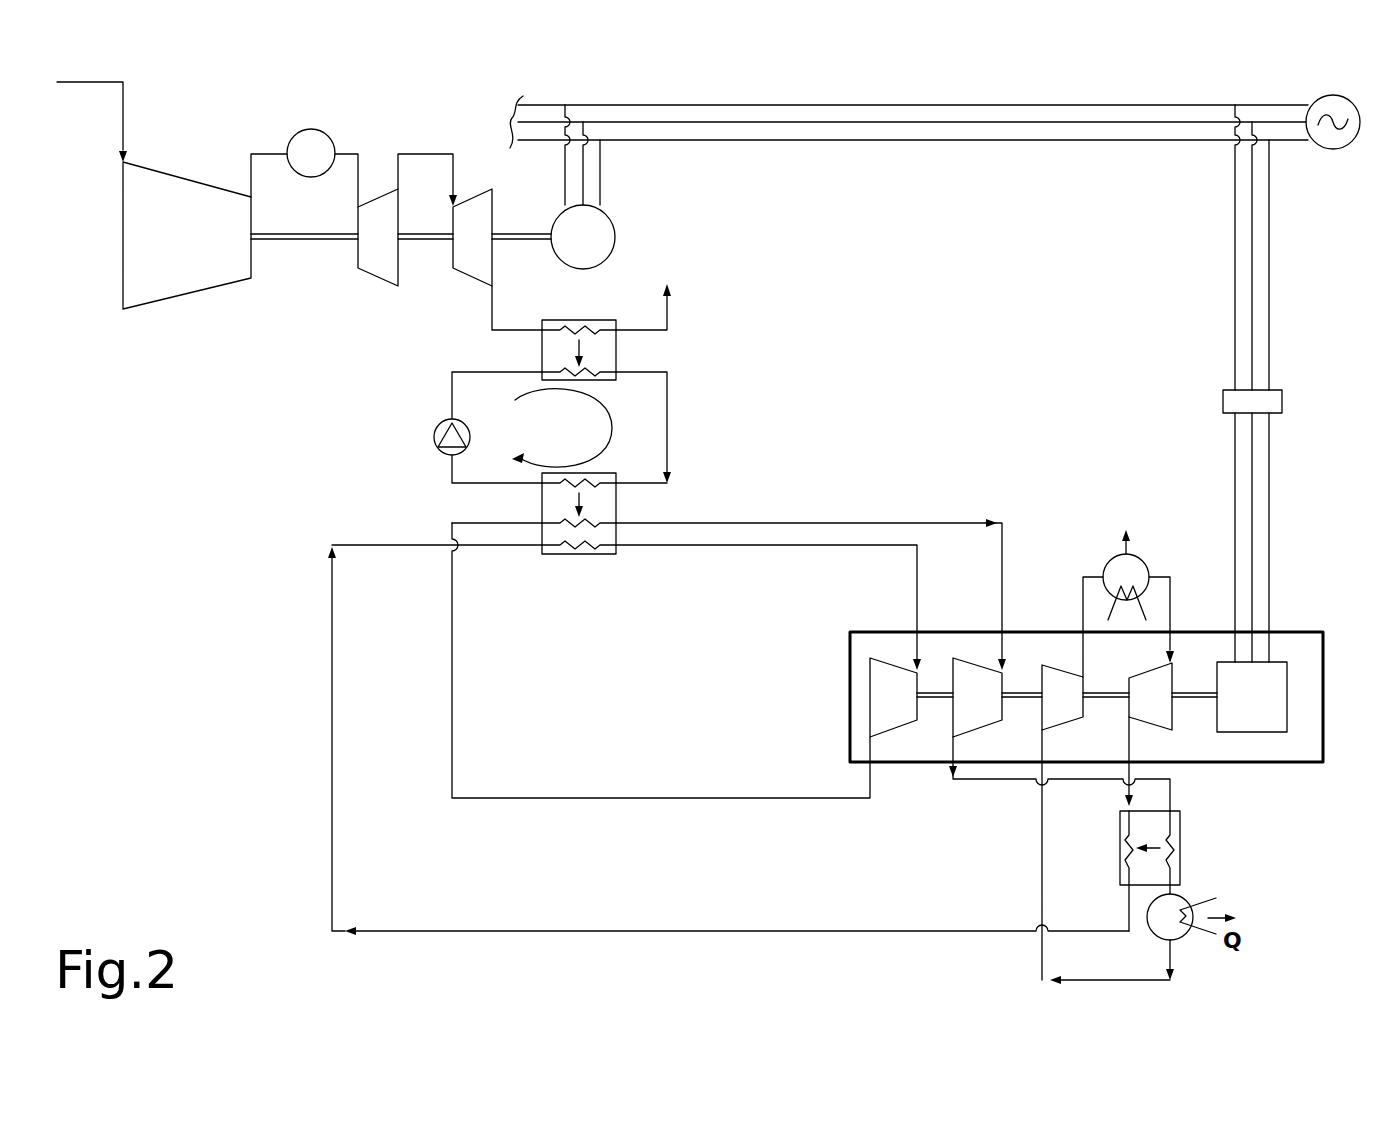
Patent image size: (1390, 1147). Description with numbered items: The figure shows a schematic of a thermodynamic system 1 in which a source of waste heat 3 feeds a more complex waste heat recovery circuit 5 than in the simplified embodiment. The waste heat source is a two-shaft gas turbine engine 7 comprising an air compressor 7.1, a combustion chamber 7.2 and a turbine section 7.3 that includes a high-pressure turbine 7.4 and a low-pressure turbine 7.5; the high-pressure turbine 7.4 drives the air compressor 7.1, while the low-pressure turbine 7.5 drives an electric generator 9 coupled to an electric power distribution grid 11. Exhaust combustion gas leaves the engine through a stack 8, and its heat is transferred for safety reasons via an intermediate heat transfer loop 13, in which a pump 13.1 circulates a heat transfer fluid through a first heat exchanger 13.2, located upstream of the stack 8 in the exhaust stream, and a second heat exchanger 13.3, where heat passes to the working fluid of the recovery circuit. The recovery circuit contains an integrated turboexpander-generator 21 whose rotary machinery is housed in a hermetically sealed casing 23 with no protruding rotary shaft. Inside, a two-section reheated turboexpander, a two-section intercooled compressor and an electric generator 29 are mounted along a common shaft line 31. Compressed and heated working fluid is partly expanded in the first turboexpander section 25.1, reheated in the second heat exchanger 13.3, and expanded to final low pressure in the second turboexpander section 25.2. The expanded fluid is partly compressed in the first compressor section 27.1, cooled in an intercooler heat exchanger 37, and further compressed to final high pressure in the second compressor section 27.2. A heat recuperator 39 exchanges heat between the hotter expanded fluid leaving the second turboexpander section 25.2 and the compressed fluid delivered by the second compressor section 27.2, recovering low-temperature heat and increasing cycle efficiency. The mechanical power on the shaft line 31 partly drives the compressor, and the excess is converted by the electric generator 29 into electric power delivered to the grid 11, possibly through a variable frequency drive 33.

The thermodynamic system 1 is at (178, 578).
The source of waste heat 3 is at (722, 175).
The waste heat recovery circuit 5 is at (1337, 446).
The gas turbine engine 7 is at (208, 333).
The air compressor 7.1 is at (141, 294).
The combustion chamber 7.2 is at (292, 148).
The turbine section 7.3 is at (490, 140).
The high-pressure turbine 7.4 is at (373, 262).
The low-pressure turbine 7.5 is at (469, 257).
The stack 8 is at (664, 313).
The electric generator 9 is at (603, 233).
The electric power distribution grid 11 is at (903, 141).
The intermediate heat transfer loop 13 is at (433, 471).
The pump 13.1 is at (440, 425).
The first heat exchanger 13.2 is at (617, 345).
The second heat exchanger 13.3 is at (617, 494).
The integrated turboexpander-generator 21 is at (935, 776).
The hermetically sealed casing 23 is at (903, 760).
The first turboexpander section 25.1 is at (880, 685).
The second turboexpander section 25.2 is at (986, 682).
The first compressor section 27.1 is at (1055, 682).
The second compressor section 27.2 is at (1160, 710).
The electric generator 29 is at (1252, 732).
The shaft line 31 is at (1195, 692).
The variable frequency drive 33 is at (1282, 400).
The intercooler heat exchanger 37 is at (1108, 566).
The heat recuperator 39 is at (1180, 868).